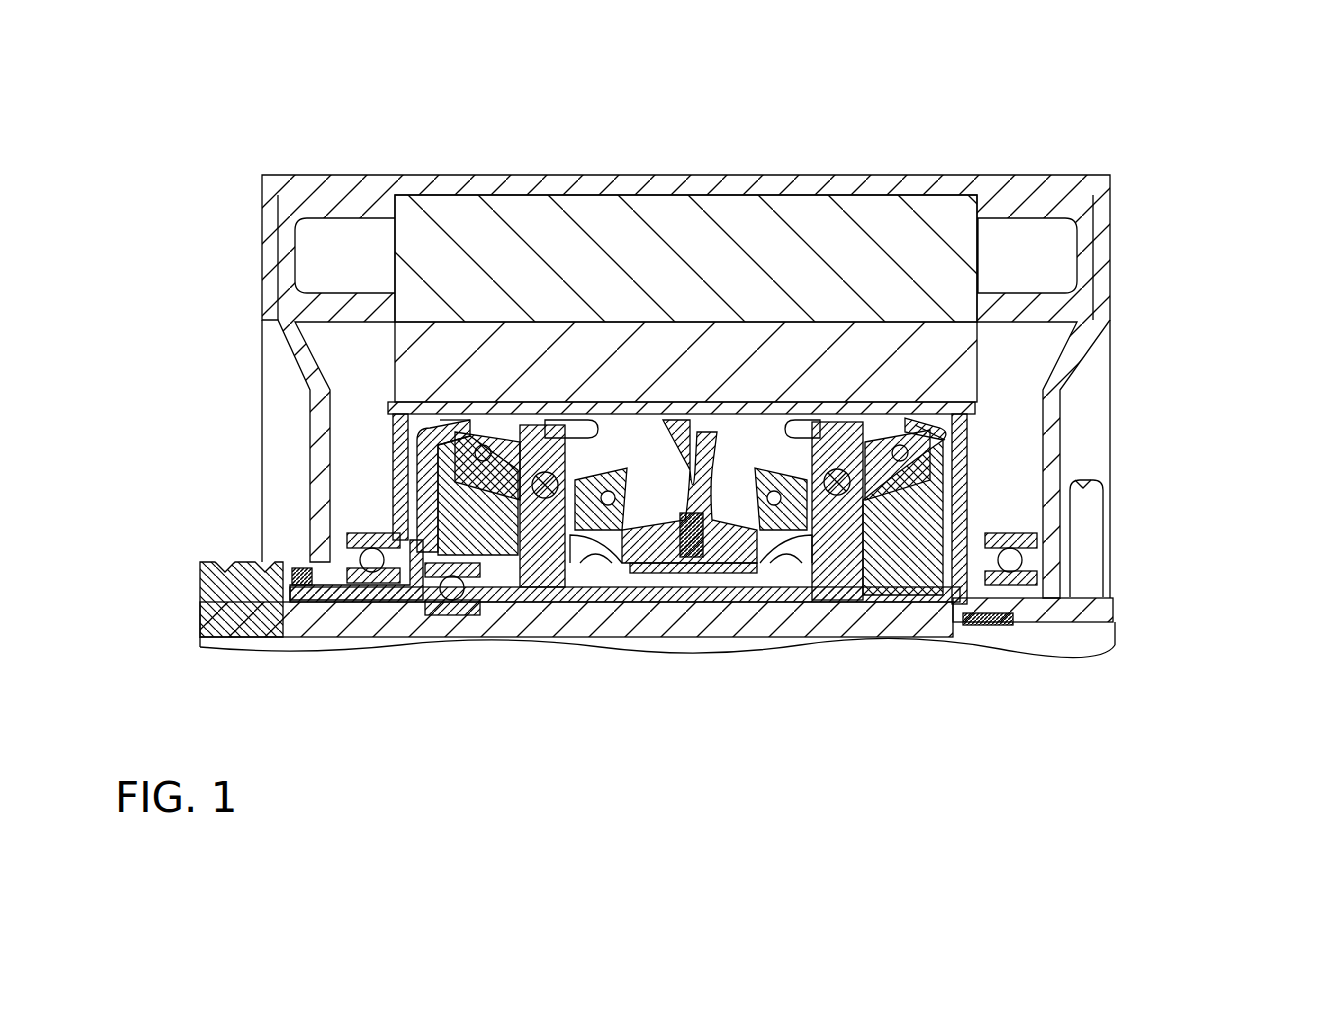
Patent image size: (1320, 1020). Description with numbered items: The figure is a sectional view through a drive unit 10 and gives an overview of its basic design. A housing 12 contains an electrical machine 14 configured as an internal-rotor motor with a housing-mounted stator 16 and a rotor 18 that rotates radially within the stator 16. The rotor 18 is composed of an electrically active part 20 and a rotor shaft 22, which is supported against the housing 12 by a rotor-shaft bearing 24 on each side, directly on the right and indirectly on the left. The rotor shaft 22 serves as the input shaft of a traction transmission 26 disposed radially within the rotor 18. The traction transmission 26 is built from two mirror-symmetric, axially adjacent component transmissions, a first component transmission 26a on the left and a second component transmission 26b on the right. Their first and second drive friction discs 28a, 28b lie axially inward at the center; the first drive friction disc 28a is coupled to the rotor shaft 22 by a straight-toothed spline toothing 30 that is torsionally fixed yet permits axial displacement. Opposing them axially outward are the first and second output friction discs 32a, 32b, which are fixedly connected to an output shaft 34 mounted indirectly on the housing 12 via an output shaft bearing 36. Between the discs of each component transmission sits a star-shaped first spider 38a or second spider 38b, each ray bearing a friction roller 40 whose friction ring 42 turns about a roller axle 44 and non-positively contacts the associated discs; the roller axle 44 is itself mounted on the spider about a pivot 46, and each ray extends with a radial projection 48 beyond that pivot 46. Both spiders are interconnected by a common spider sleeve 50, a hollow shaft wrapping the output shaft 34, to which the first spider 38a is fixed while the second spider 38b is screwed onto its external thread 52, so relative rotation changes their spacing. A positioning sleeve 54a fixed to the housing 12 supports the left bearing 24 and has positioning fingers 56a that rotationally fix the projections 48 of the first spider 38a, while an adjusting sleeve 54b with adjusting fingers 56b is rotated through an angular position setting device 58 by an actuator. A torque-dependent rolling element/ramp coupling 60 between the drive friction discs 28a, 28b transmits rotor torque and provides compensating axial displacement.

The drive unit 10 is at (1208, 133).
The housing 12 is at (1040, 183).
The electrical machine 14 is at (575, 212).
The stator 16 is at (603, 222).
The rotor 18 is at (637, 328).
The electrically active part 20 is at (740, 325).
The rotor shaft 22 is at (980, 425).
The rotor-shaft bearing 24 is at (372, 560).
The traction transmission 26 is at (688, 608).
The first component transmission 26a is at (581, 568).
The second component transmission 26b is at (787, 568).
The first drive friction disc 28a is at (650, 530).
The second drive friction disc 28b is at (722, 533).
The spline toothing 30 is at (670, 420).
The first output friction disc 32a is at (452, 485).
The second output friction disc 32b is at (930, 493).
The output shaft 34 is at (310, 627).
The output shaft bearing 36 is at (452, 588).
The first spider 38a is at (547, 527).
The second spider 38b is at (840, 532).
The friction roller 40 is at (478, 448).
The friction ring 42 is at (440, 420).
The roller axle 44 is at (468, 425).
The pivot 46 is at (507, 462).
The radial projection 48 is at (545, 485).
The spider sleeve 50 is at (580, 595).
The external thread 52 is at (807, 597).
The positioning sleeve 54a is at (423, 457).
The adjusting sleeve 54b is at (960, 452).
The positioning finger 56a is at (560, 430).
The adjusting finger 56b is at (798, 428).
The angular position setting device 58 is at (1087, 573).
The rolling element/ramp coupling 60 is at (732, 357).